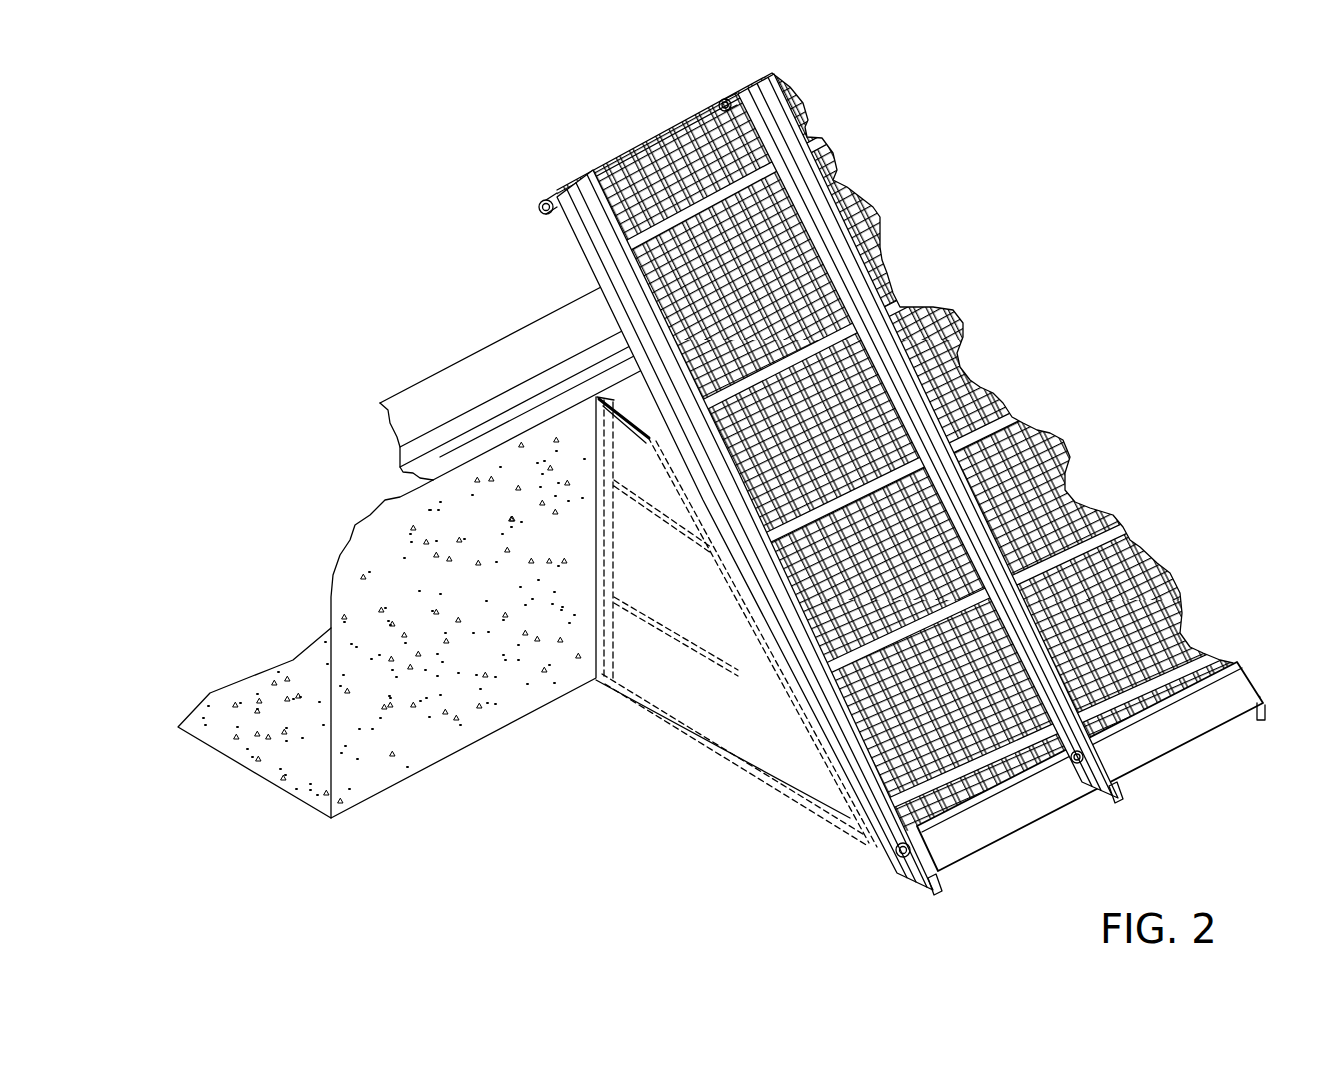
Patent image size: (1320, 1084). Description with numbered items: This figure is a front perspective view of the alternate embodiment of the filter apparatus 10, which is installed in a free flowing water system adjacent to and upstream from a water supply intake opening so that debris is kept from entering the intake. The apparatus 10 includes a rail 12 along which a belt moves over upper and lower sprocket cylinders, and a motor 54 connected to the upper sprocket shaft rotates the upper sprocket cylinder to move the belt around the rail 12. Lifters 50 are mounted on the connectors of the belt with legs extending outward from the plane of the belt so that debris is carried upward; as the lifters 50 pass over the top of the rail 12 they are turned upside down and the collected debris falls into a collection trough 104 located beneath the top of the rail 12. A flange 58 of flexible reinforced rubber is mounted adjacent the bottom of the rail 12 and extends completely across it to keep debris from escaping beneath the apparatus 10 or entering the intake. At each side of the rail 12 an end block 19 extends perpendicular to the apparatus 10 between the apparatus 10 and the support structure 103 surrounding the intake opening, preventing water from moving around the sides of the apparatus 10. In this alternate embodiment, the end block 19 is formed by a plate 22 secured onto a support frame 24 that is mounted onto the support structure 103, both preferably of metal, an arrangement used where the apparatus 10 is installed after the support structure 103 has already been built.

The filter apparatus 10 is at (850, 474).
The rail 12 is at (573, 248).
The end block 19 is at (703, 635).
The plate 22 is at (712, 713).
The support frame 24 is at (690, 647).
The lifter 50 is at (877, 825).
The motor 54 is at (540, 204).
The flange 58 is at (957, 840).
The support structure 103 is at (430, 693).
The collection trough 104 is at (475, 363).